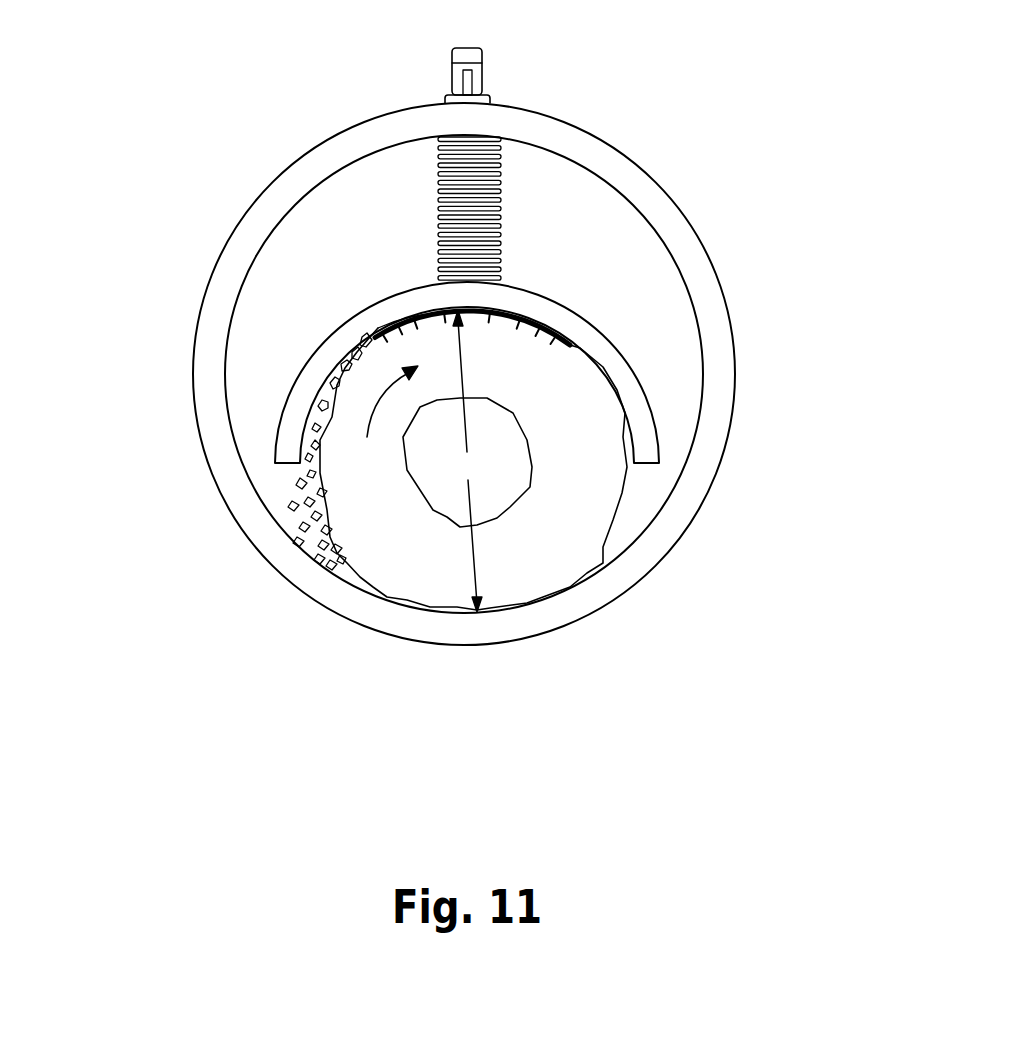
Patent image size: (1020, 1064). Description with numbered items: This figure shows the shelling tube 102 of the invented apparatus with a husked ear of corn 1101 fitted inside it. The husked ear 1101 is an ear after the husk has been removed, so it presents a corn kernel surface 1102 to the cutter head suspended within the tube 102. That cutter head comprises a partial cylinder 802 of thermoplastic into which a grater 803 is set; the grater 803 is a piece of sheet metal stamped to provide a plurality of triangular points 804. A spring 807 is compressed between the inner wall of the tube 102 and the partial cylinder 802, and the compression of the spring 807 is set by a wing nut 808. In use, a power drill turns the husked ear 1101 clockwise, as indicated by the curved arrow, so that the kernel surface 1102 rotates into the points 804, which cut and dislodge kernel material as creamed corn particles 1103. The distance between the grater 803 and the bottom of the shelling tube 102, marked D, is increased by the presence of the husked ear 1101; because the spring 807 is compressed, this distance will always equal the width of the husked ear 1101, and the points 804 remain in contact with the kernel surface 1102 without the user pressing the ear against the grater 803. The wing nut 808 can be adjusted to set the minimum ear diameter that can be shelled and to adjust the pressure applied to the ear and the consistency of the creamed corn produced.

The shelling tube 102 is at (646, 190).
The partial cylinder 802 is at (627, 385).
The grater 803 is at (532, 310).
The triangular points 804 is at (432, 308).
The spring 807 is at (492, 173).
The wing nut 808 is at (465, 77).
The husked ear of corn 1101 is at (555, 432).
The corn kernel surface 1102 is at (325, 428).
The creamed corn particles 1103 is at (297, 540).